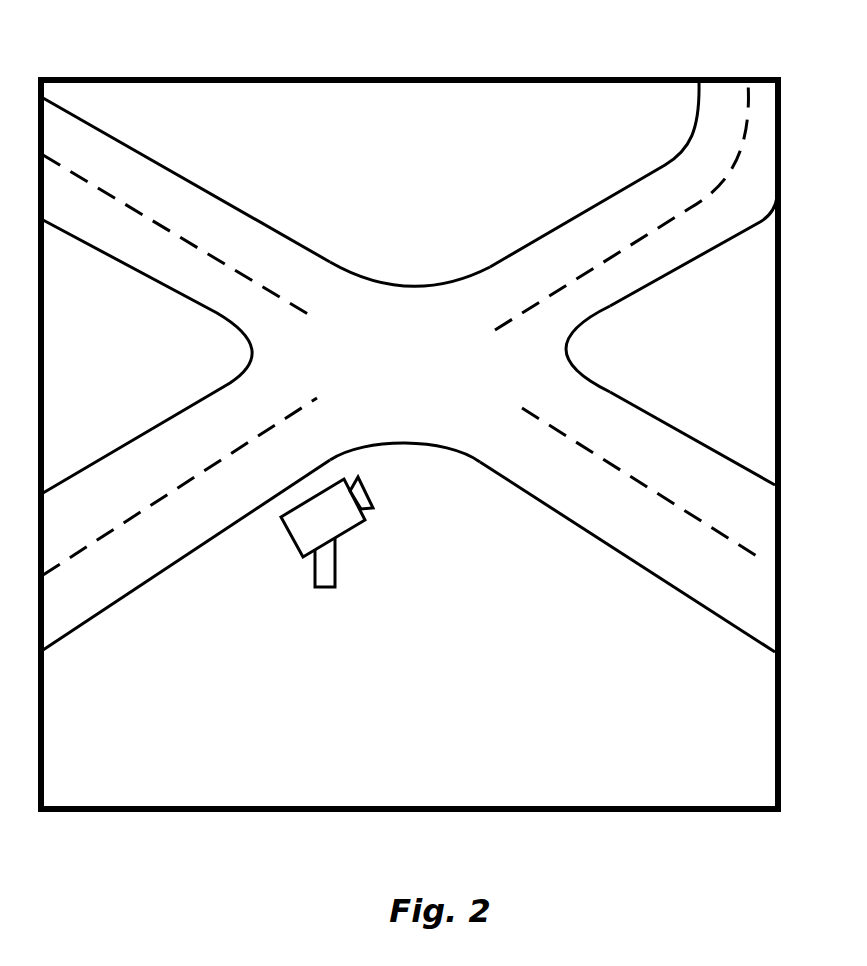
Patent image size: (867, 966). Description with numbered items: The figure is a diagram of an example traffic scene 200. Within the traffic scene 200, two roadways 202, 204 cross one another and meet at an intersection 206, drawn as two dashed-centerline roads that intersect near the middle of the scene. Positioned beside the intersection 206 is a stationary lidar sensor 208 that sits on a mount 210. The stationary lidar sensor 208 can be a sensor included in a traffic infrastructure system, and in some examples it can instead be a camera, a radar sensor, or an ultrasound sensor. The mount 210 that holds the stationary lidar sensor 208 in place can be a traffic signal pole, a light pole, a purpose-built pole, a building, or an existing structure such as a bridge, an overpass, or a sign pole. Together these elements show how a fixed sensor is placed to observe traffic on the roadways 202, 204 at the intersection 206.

The traffic scene 200 is at (237, 76).
The roadway 202 is at (168, 167).
The roadway 204 is at (647, 176).
The intersection 206 is at (418, 457).
The stationary lidar sensor 208 is at (291, 535).
The mount 210 is at (335, 560).